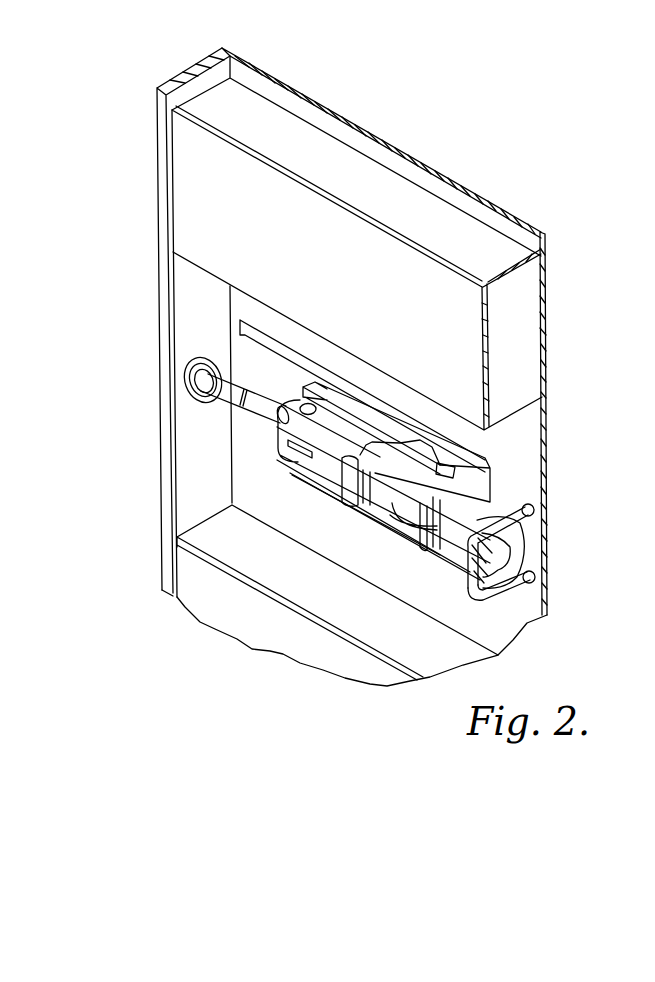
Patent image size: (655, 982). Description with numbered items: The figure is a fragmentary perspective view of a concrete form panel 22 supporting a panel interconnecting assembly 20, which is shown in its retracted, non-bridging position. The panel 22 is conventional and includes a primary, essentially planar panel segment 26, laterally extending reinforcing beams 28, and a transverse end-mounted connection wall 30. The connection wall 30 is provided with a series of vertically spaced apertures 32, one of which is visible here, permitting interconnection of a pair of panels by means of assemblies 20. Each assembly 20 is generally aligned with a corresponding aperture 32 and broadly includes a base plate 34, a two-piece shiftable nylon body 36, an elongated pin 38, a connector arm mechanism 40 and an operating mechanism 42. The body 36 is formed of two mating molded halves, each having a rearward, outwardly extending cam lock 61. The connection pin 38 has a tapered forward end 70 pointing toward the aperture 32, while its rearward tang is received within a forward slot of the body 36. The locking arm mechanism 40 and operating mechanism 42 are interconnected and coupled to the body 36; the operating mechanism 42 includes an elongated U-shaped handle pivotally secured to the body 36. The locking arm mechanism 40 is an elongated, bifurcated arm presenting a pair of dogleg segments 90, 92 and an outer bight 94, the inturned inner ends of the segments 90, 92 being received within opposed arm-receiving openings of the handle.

The panel interconnecting assembly 20 is at (141, 413).
The panel 22 is at (455, 164).
The panel segment 26 is at (536, 478).
The reinforcing beams 28 is at (502, 247).
The connection walls 30 is at (176, 326).
The aperture 32 is at (216, 364).
The base plate 34 is at (502, 450).
The shiftable nylon body 36 is at (380, 407).
The elongated pin 38 is at (225, 427).
The connector arm mechanism 40 is at (495, 618).
The operating mechanism 42 is at (545, 599).
The cam lock 61 is at (443, 465).
The tapered forward end 70 is at (235, 393).
The dogleg segment 90 is at (520, 493).
The dogleg segment 92 is at (522, 565).
The outer bight 94 is at (472, 563).